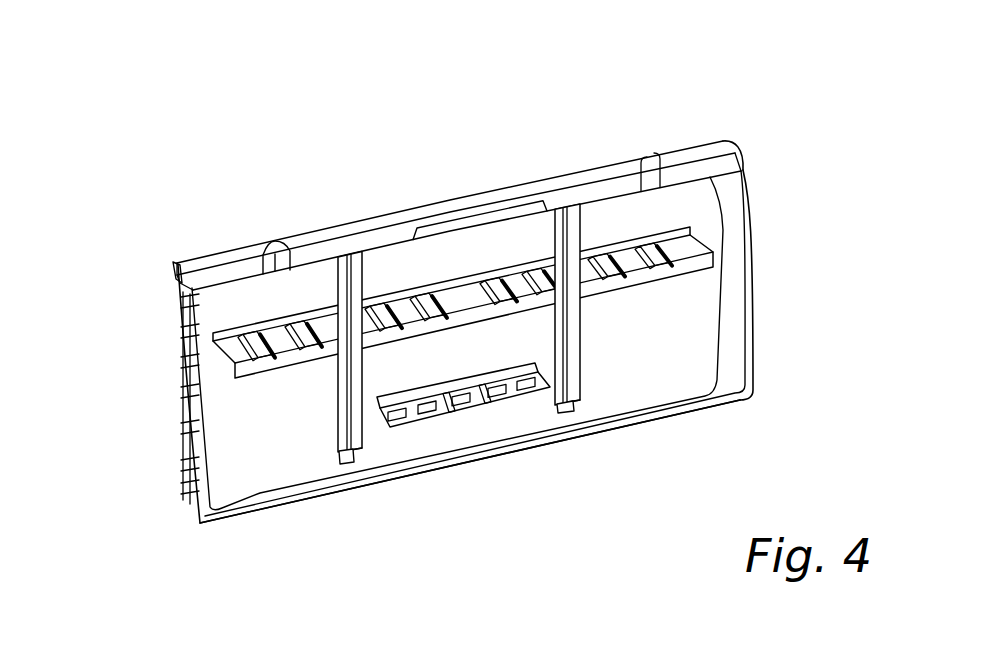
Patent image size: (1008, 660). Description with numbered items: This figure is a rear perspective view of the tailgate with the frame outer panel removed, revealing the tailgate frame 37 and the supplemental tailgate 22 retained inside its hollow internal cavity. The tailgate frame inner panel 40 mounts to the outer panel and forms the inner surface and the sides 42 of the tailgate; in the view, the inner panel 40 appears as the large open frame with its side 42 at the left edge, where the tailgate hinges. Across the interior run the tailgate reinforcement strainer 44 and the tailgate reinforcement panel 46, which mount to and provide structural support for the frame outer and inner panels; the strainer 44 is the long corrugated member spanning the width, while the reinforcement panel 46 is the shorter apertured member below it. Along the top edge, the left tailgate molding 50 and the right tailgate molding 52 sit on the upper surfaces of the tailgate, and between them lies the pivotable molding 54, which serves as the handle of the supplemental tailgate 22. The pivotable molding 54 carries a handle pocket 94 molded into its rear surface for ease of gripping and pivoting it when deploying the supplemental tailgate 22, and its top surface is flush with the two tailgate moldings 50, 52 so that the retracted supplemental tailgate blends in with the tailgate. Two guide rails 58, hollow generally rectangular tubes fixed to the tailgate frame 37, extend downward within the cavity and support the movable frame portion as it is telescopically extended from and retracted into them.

The supplemental tailgate 22 is at (560, 150).
The tailgate frame 37 is at (778, 192).
The tailgate frame inner panel 40 is at (308, 498).
The sides 42 is at (183, 420).
The tailgate reinforcement strainer 44 is at (272, 375).
The tailgate reinforcement panel 46 is at (544, 395).
The left tailgate molding 50 is at (227, 243).
The right tailgate molding 52 is at (683, 145).
The pivotable molding 54 is at (367, 218).
The guide rails 58 is at (385, 430).
The handle pocket 94 is at (510, 208).